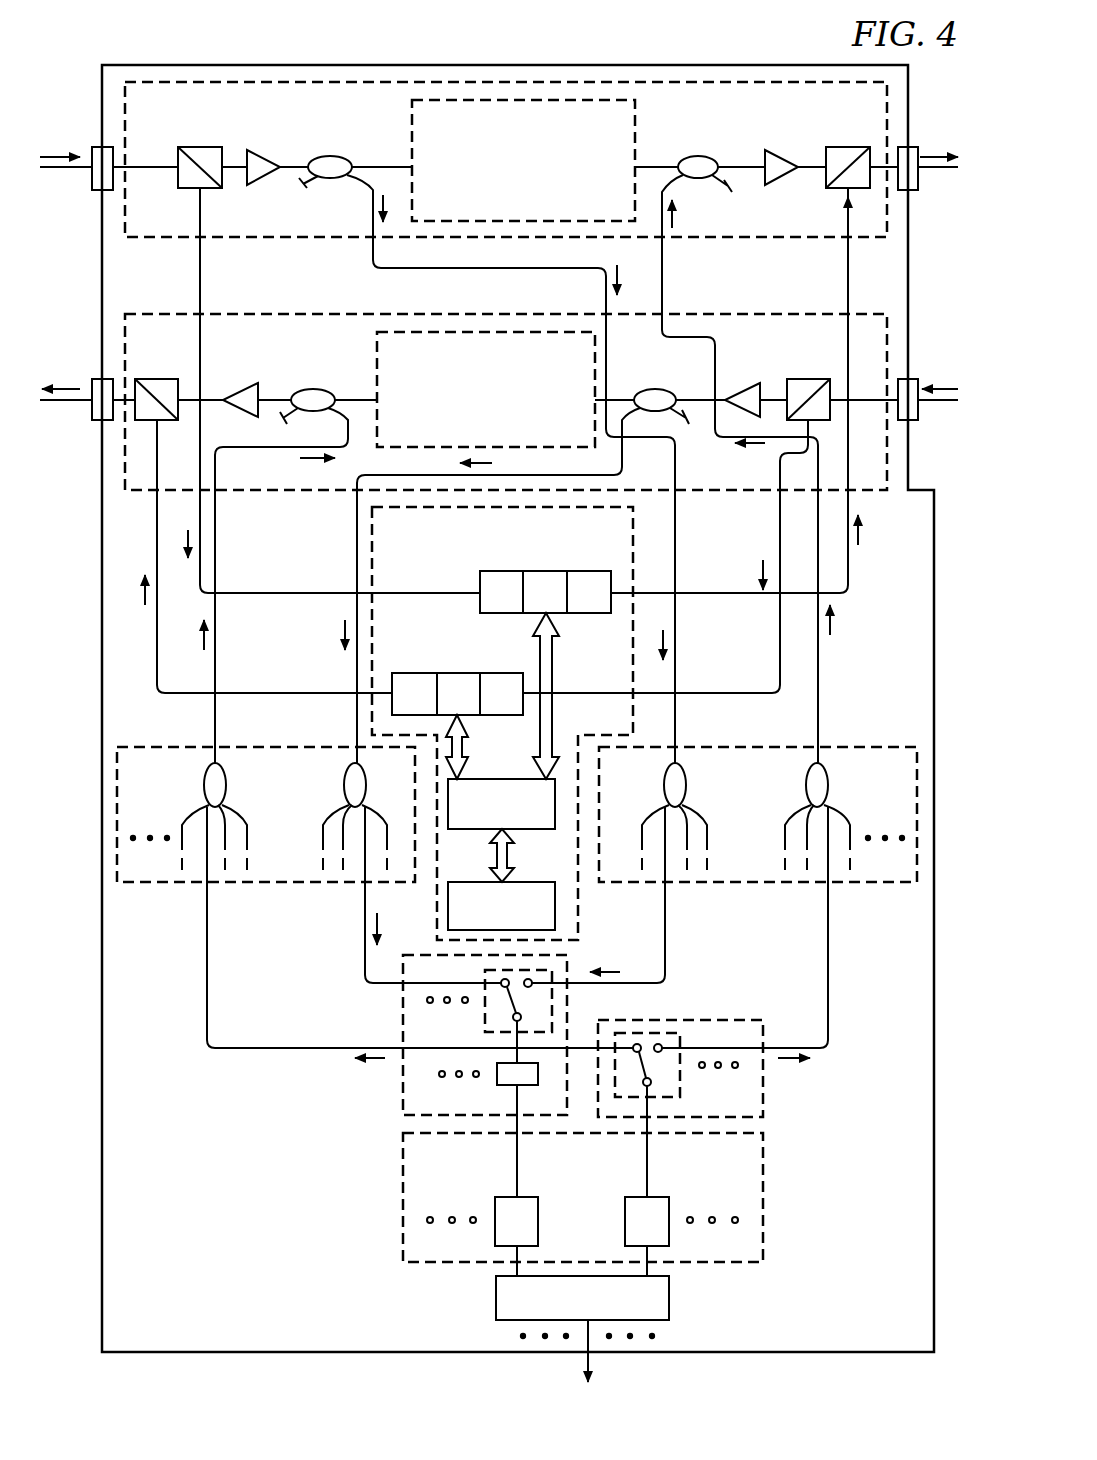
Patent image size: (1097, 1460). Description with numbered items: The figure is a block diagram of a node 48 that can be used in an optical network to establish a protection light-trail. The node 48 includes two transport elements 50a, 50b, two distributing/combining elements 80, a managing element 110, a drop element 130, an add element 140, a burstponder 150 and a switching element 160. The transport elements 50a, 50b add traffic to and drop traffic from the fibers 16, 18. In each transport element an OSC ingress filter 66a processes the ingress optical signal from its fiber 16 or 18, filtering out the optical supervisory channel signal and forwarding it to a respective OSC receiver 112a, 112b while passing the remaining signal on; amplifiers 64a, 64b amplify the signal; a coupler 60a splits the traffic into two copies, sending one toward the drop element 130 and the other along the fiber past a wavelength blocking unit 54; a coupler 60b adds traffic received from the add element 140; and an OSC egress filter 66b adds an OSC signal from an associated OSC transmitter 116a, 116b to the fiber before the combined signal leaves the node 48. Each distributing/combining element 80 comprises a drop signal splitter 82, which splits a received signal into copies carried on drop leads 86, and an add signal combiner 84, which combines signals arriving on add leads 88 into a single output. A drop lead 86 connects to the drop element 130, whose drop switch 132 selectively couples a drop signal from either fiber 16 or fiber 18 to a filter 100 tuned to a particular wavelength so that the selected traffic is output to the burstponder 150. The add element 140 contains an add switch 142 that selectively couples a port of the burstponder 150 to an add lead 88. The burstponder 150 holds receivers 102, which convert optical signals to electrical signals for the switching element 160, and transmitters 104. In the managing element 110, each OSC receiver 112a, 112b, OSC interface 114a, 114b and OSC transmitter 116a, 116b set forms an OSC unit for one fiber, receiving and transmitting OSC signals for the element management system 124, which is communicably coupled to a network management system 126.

The fiber 16 is at (86, 178).
The fiber 18 is at (86, 410).
The node 48 is at (246, 63).
The transport element 50a is at (290, 244).
The transport element 50b is at (716, 312).
The wavelength blocking unit 54 is at (506, 273).
The coupler 60a is at (330, 156).
The coupler 60b is at (700, 157).
The amplifier 64a is at (268, 160).
The amplifier 64b is at (787, 160).
The OSC ingress filter 66a is at (205, 147).
The OSC egress filter 66b is at (850, 147).
The distributing/combining element 80 is at (265, 886).
The drop signal splitter 82 is at (344, 778).
The add signal combiner 84 is at (228, 783).
The drop lead 86 is at (387, 826).
The add lead 88 is at (182, 826).
The filter 100 is at (496, 1078).
The receiver 102 is at (498, 1197).
The transmitter 104 is at (668, 1197).
The managing element 110 is at (584, 906).
The OSC receiver 112a is at (480, 582).
The OSC receiver 112b is at (492, 718).
The OSC interface 114a is at (530, 571).
The OSC interface 114b is at (458, 673).
The OSC transmitter 116a is at (590, 571).
The OSC transmitter 116b is at (415, 673).
The element management system 124 is at (501, 830).
The network management system 126 is at (501, 906).
The drop element 130 is at (402, 1022).
The drop switch 132 is at (483, 1012).
The add element 140 is at (699, 1018).
The add switch 142 is at (682, 1074).
The burstponder 150 is at (768, 1220).
The switching element 160 is at (669, 1298).